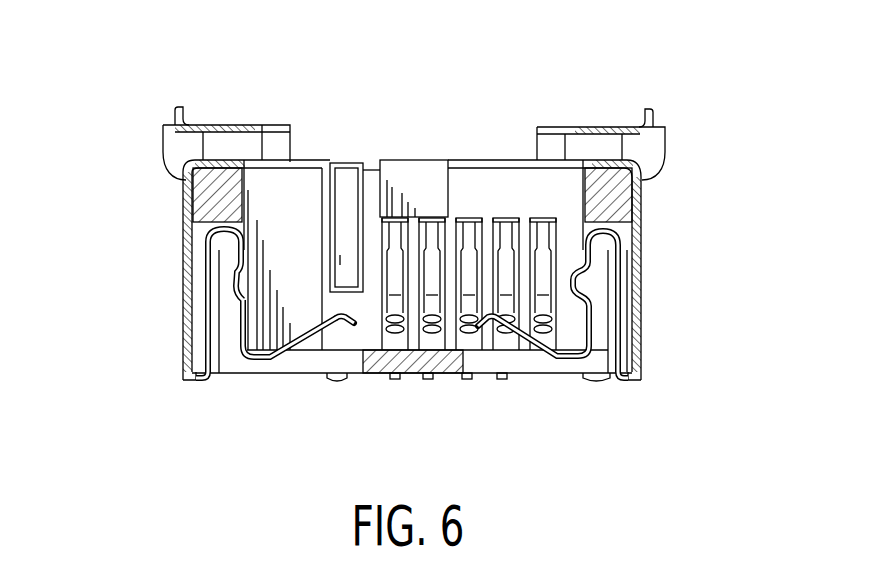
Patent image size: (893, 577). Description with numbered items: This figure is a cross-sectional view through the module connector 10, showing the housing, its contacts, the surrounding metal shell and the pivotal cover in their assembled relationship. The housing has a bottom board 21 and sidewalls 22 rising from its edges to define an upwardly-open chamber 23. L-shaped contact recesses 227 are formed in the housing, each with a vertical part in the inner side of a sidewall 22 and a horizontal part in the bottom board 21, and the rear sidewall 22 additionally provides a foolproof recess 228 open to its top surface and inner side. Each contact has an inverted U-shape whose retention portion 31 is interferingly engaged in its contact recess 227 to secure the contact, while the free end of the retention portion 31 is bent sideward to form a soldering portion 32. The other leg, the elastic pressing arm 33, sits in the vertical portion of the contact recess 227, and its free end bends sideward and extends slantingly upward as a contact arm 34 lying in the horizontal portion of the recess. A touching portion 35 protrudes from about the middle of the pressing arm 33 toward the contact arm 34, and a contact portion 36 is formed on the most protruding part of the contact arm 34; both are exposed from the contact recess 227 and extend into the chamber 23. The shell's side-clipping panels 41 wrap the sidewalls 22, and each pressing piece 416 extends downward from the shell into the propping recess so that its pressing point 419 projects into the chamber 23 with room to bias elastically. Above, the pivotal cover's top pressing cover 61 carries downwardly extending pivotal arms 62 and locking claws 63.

The module connector 10 is at (130, 70).
The bottom board 21 is at (420, 363).
The sidewall 22 is at (220, 203).
The chamber 23 is at (275, 352).
The retention portion 31 is at (237, 263).
The soldering portion 32 is at (197, 373).
The elastic pressing arm 33 is at (238, 313).
The contact arm 34 is at (298, 350).
The touching portion 35 is at (236, 283).
The contact portion 36 is at (343, 327).
The side-clipping panel 41 is at (183, 218).
The top pressing cover 61 is at (210, 125).
The pivotal arm 62 is at (177, 153).
The locking claw 63 is at (272, 150).
The contact recess 227 is at (228, 343).
The foolproof recess 228 is at (403, 190).
The pressing piece 416 is at (342, 198).
The pressing point 419 is at (342, 260).